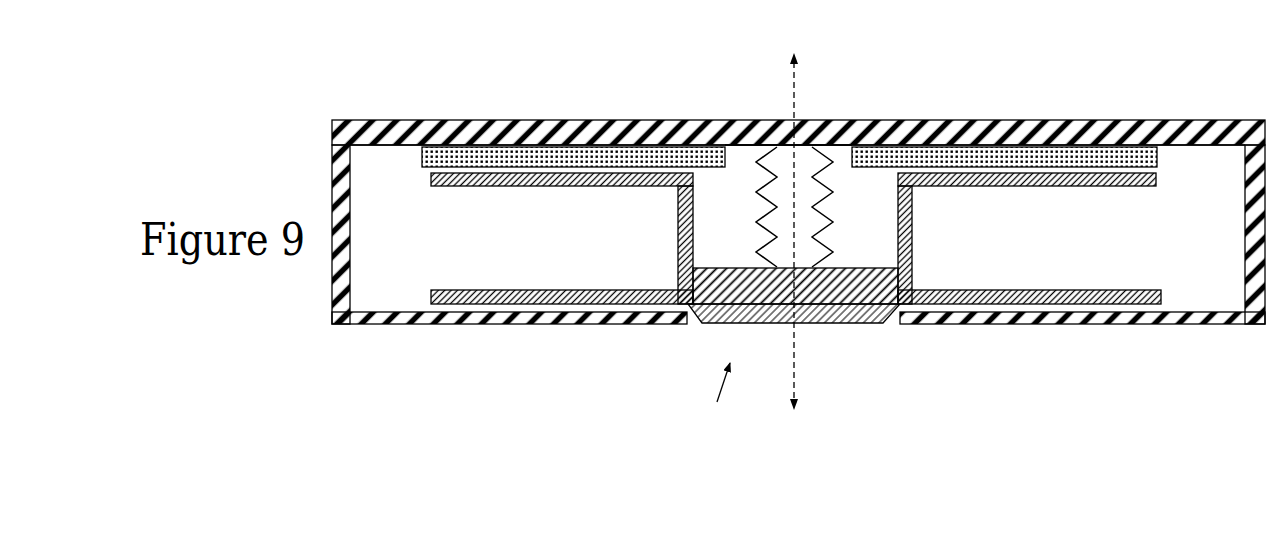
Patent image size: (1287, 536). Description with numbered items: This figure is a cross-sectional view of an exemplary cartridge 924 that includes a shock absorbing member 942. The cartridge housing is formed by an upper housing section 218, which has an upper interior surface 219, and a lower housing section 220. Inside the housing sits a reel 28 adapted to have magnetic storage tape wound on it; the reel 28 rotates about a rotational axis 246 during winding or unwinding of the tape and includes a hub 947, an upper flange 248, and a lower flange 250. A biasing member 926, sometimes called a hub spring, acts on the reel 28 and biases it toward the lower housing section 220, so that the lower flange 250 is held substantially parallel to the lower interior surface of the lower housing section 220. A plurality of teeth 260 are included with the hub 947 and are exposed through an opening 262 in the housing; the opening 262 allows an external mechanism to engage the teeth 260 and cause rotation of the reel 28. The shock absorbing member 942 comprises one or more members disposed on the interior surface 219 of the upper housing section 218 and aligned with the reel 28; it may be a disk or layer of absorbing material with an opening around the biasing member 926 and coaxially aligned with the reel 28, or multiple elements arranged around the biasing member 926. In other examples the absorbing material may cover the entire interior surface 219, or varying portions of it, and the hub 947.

The cartridge 924 is at (378, 100).
The upper flange 248 is at (493, 173).
The reel 28 is at (622, 162).
The shock absorbing member 942 is at (680, 147).
The biasing member 926 is at (765, 163).
The upper interior surface 219 is at (965, 131).
The upper housing section 218 is at (1007, 130).
The lower flange 250 is at (438, 303).
The lower housing section 220 is at (518, 323).
The teeth 260 is at (712, 323).
The opening 262 is at (710, 403).
The rotational axis 246 is at (798, 355).
The hub 947 is at (873, 283).